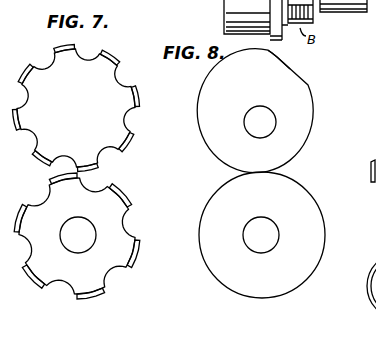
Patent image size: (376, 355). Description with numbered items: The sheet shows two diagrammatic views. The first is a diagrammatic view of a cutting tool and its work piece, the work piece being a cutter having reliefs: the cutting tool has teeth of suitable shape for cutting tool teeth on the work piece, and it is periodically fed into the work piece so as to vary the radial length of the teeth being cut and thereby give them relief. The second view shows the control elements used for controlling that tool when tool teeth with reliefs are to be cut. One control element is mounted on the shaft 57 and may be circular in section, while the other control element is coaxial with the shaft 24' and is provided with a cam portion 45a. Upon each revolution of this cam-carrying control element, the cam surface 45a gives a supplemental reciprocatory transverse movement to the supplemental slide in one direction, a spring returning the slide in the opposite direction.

The cam portion 45a is at (288, 66).
The shaft 24' is at (260, 122).
The shaft 57 is at (261, 235).